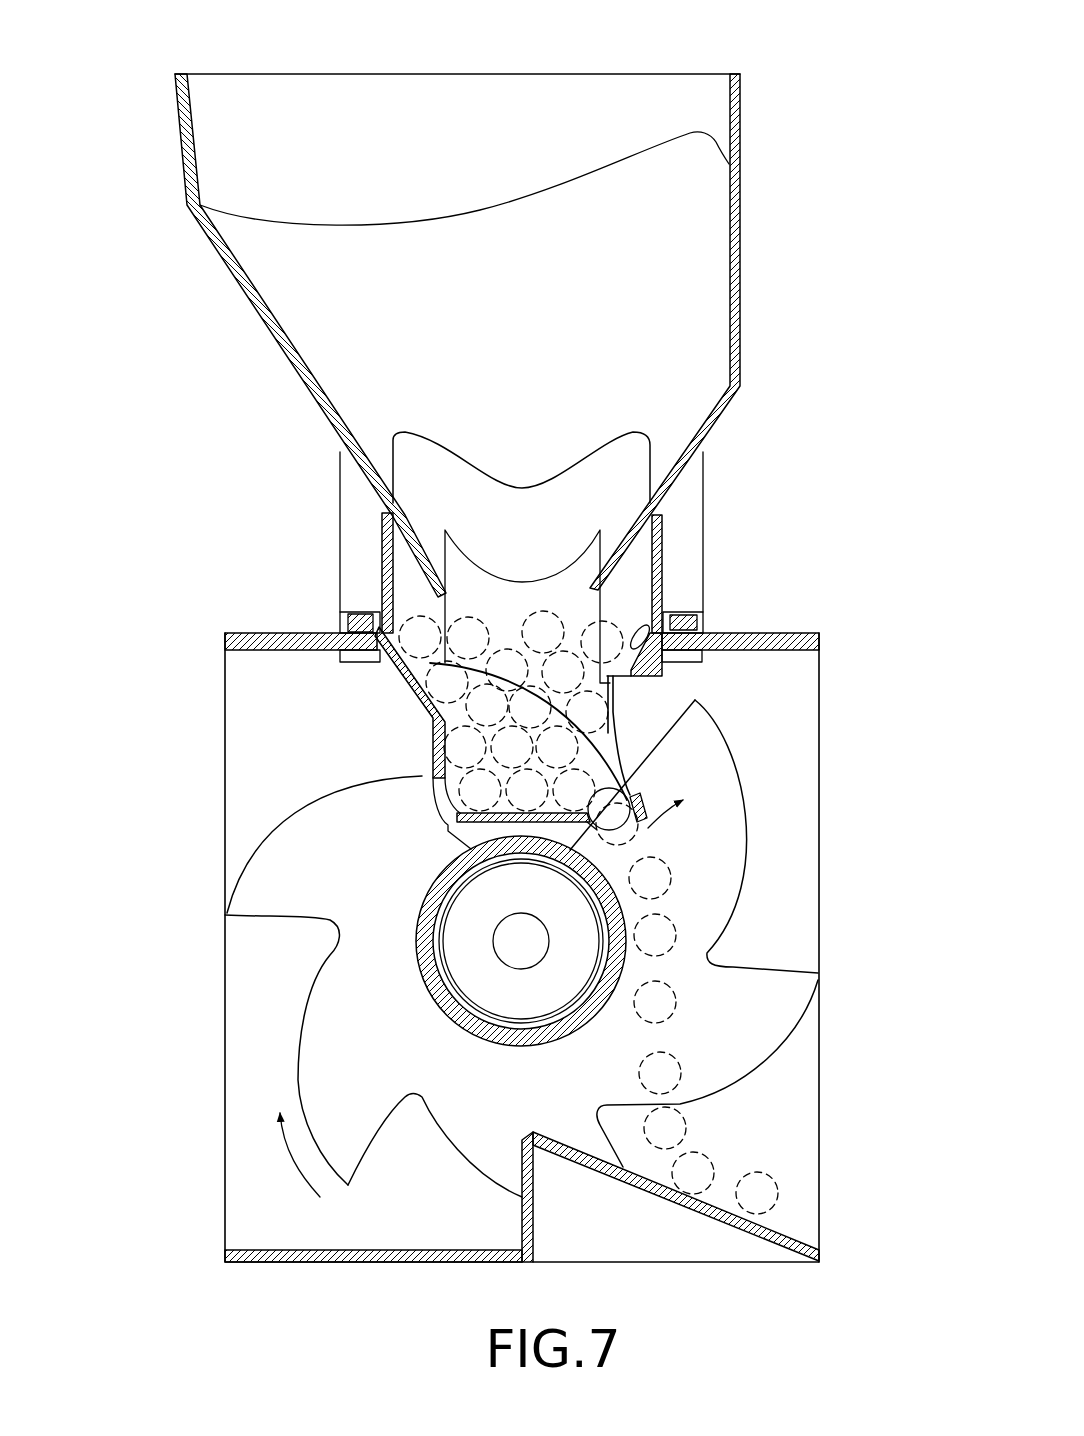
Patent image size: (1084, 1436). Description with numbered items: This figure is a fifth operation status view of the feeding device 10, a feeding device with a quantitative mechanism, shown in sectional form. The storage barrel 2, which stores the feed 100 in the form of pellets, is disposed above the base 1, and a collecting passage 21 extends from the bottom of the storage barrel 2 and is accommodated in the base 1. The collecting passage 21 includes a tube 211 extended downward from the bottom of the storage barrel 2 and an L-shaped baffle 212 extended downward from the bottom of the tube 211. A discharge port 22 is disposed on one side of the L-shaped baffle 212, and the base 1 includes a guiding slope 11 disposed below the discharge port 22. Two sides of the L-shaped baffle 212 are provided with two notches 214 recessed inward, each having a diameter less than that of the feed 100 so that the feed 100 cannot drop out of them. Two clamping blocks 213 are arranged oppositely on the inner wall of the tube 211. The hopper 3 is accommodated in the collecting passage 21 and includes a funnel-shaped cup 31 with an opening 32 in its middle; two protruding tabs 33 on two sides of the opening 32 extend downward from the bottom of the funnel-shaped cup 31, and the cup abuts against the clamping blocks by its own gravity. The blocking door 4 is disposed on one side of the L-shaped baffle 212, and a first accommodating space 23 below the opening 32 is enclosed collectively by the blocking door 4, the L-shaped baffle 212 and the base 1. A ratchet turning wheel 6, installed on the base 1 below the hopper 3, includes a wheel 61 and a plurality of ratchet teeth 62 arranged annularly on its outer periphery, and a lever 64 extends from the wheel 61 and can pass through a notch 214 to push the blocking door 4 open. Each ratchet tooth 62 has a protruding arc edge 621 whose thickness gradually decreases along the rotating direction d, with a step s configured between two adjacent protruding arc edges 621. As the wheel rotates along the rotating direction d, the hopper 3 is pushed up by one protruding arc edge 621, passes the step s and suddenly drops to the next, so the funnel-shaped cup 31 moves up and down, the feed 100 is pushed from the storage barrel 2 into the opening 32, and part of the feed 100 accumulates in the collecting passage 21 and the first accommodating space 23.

The feeding device 10 is at (449, 25).
The base 1 is at (561, 947).
The guiding slope 11 is at (723, 1188).
The storage barrel 2 is at (740, 285).
The collecting passage 21 is at (475, 557).
The tube 211 is at (385, 573).
The L-shaped baffle 212 is at (430, 747).
The clamping block 213 is at (430, 663).
The notch 214 is at (442, 793).
The discharge port 22 is at (620, 793).
The first accommodating space 23 is at (606, 740).
The hopper 3 is at (521, 416).
The funnel-shaped cup 31 is at (538, 487).
The opening 32 is at (597, 588).
The protruding tab 33 is at (503, 633).
The blocking door 4 is at (612, 762).
The ratchet turning wheel 6 is at (457, 1036).
The wheel 61 is at (473, 1080).
The ratchet tooth 62 is at (350, 1137).
The protruding arc edge 621 is at (297, 1077).
The lever 64 is at (643, 815).
The feed 100 is at (662, 1002).
The step s is at (263, 917).
The rotating direction d is at (294, 1155).